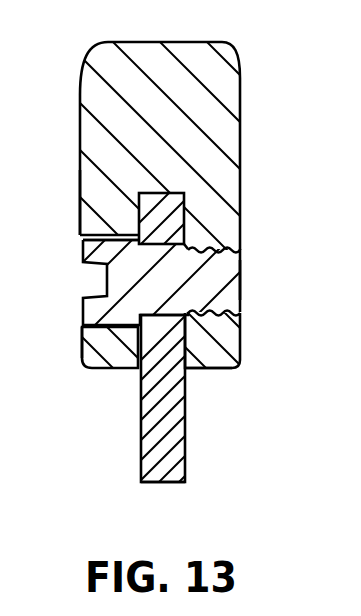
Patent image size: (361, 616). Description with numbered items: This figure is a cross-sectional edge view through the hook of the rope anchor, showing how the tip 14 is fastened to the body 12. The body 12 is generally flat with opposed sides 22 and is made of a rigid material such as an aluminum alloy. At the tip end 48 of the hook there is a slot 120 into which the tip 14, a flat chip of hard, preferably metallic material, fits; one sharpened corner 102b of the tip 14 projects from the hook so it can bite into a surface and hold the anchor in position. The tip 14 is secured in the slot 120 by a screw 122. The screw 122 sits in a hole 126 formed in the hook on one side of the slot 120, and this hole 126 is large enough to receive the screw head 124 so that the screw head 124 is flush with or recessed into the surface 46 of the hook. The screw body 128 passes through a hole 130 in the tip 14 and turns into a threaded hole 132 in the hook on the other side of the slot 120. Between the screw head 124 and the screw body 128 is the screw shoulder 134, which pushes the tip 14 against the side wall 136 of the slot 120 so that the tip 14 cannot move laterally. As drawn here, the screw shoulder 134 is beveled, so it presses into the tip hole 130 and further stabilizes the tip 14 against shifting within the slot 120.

The body 12 is at (180, 308).
The tip 14 is at (196, 443).
The opposed sides 22 is at (80, 153).
The surface of the hook 46 is at (78, 225).
The tip end of the hook 48 is at (207, 372).
The corner 102b is at (165, 483).
The slot 120 is at (137, 356).
The screw 122 is at (230, 297).
The screw head 124 is at (82, 313).
The hole 126 is at (82, 343).
The screw body 128 is at (228, 275).
The hole in the tip 130 is at (190, 320).
The threaded hole 132 is at (187, 228).
The screw shoulder 134 is at (137, 240).
The side wall of the slot 136 is at (186, 226).